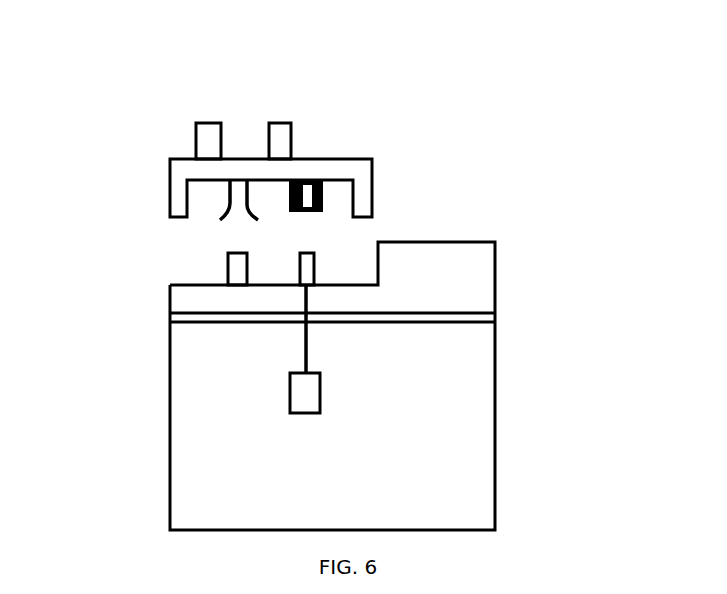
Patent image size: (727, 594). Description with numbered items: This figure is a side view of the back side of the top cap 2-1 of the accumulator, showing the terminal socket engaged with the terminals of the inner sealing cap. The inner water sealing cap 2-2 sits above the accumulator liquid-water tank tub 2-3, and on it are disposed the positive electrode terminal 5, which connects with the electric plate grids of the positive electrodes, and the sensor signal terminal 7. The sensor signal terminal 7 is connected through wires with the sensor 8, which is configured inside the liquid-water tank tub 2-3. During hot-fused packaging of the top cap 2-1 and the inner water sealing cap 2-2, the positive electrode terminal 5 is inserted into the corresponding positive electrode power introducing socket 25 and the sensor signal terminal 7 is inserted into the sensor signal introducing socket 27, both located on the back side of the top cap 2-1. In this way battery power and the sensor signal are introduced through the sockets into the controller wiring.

The top cap of the accumulator 2-1 is at (173, 158).
The inner water sealing cap 2-2 is at (496, 241).
The accumulator liquid-water tank tub 2-3 is at (463, 390).
The positive electrode terminal 5 is at (227, 262).
The sensor signal terminal 7 is at (310, 250).
The sensor 8 is at (288, 378).
The positive electrode power introducing socket 25 is at (222, 220).
The sensor signal introducing socket 27 is at (323, 180).